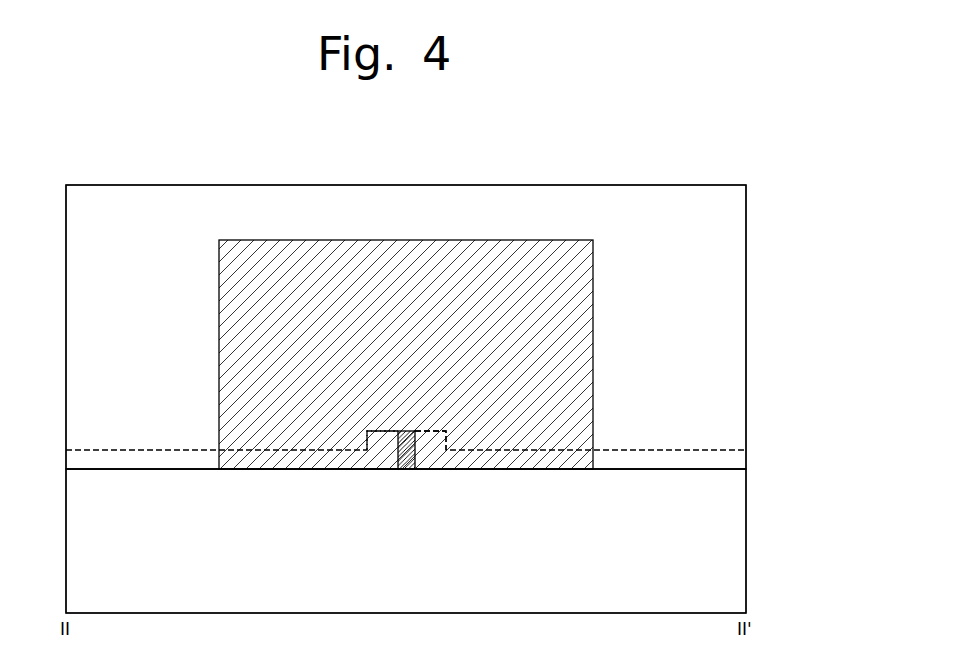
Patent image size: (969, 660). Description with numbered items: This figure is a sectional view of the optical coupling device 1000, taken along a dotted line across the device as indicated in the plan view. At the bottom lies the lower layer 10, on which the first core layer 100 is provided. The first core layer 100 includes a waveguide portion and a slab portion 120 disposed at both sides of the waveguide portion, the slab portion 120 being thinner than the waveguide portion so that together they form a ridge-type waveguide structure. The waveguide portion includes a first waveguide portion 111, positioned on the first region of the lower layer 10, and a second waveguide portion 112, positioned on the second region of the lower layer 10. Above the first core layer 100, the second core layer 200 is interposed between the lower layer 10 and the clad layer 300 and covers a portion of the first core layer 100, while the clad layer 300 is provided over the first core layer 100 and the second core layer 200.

The optical coupling device 1000 is at (671, 159).
The clad layer 300 is at (418, 225).
The second core layer 200 is at (418, 340).
The first core layer 100 is at (735, 460).
The slab portion 120 is at (673, 453).
The first waveguide portion 111 is at (437, 430).
The second waveguide portion 112 is at (405, 470).
The lower layer 10 is at (413, 575).